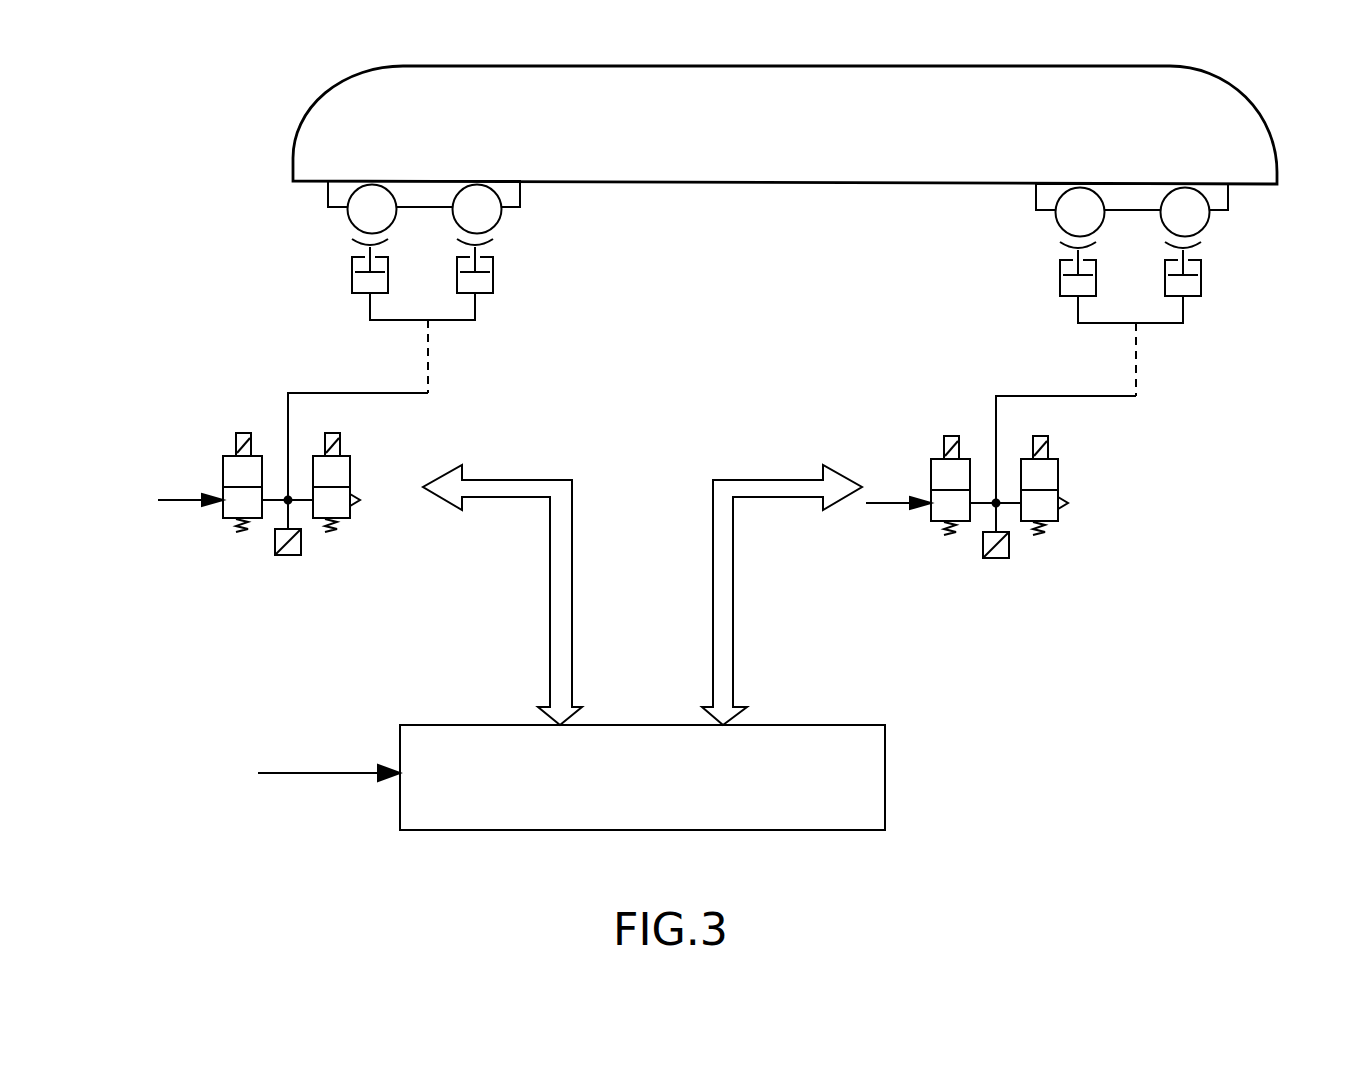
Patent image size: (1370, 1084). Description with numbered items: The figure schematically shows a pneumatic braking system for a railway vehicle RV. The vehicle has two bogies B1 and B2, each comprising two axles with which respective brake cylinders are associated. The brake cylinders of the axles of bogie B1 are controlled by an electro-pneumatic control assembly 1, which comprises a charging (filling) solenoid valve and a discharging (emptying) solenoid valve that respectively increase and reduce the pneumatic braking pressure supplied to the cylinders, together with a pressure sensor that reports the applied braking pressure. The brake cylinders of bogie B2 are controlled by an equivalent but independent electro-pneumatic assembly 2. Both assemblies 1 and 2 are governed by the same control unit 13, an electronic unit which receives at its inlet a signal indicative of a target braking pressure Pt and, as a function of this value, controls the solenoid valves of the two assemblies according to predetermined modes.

The railway vehicle RV is at (347, 118).
The bogie B1 is at (335, 197).
The bogie B2 is at (1018, 215).
The electro-pneumatic control assembly 1 is at (234, 418).
The electro-pneumatic assembly 2 is at (995, 461).
The control unit 13 is at (637, 725).
The target braking pressure Pt is at (314, 771).